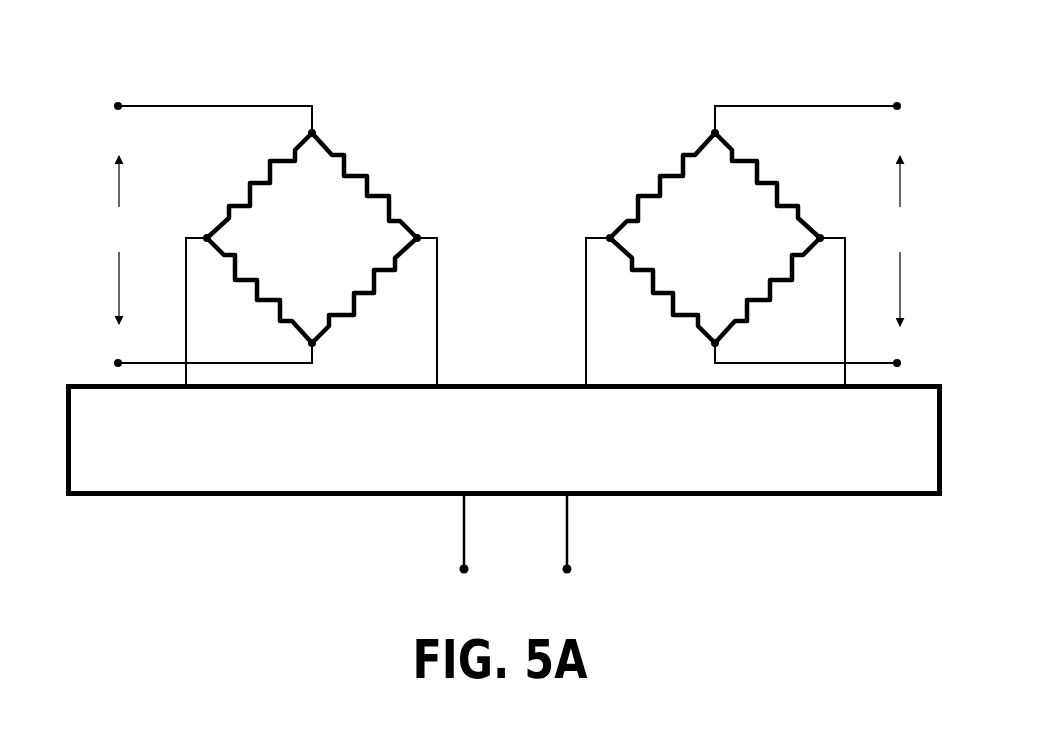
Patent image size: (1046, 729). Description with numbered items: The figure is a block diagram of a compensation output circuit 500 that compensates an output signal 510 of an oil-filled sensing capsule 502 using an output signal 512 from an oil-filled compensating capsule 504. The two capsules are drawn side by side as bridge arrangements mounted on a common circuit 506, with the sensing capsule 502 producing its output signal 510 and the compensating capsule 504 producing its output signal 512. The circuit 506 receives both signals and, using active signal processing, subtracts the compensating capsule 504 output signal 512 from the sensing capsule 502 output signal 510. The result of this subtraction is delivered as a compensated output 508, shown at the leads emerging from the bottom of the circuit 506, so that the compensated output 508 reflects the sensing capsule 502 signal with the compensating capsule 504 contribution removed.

The circuit 500 is at (578, 58).
The oil-filled sensing capsule 502 is at (425, 192).
The oil-filled compensating capsule 504 is at (656, 134).
The circuit 506 is at (175, 436).
The compensated output 508 is at (552, 588).
The output signal 510 is at (228, 238).
The output signal 512 is at (798, 238).